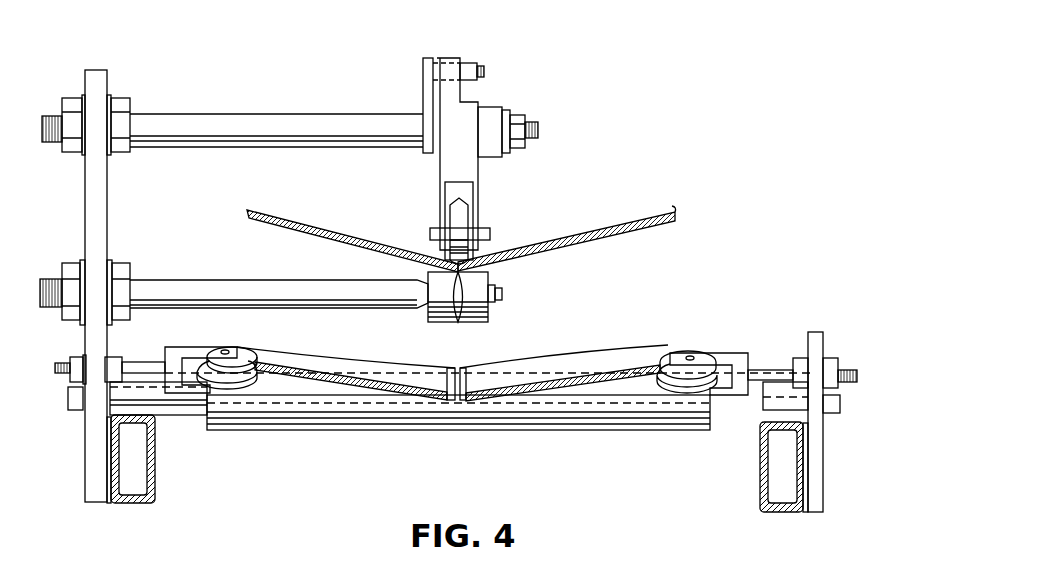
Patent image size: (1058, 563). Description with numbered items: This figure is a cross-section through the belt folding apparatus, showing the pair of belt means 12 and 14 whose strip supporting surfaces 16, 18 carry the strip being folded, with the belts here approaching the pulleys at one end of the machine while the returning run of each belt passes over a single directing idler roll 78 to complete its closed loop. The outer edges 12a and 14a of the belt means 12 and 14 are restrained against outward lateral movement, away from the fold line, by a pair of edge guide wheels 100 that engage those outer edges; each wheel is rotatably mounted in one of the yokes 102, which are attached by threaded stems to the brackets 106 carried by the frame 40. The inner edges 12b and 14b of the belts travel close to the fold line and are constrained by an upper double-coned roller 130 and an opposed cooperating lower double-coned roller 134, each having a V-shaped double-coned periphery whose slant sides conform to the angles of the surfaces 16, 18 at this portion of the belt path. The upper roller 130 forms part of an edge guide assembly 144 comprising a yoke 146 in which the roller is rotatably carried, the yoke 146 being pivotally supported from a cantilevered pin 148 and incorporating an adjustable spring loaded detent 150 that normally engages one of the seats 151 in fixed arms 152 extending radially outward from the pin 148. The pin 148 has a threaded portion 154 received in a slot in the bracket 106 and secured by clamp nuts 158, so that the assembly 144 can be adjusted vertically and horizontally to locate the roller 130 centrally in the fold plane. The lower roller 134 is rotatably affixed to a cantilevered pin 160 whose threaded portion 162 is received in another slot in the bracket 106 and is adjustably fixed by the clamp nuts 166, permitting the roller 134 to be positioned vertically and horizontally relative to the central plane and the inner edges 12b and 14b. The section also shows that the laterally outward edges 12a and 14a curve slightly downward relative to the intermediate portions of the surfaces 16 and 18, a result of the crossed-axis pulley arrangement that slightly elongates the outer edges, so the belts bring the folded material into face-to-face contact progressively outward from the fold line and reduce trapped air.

The belt means 12 is at (660, 222).
The outer edge 12a is at (676, 212).
The inner edge 12b is at (470, 272).
The belt means 14 is at (258, 221).
The outer edge 14a is at (247, 210).
The inner edge 14b is at (440, 275).
The strip supporting surface 16 is at (617, 232).
The strip supporting surface 18 is at (290, 222).
The frame 40 is at (149, 501).
The directing idler roll 78 is at (273, 430).
The edge guide wheels 100 is at (228, 352).
The yokes 102 is at (138, 362).
The brackets 106 is at (108, 190).
The upper double-coned roller 130 is at (462, 210).
The lower double-coned roller 134 is at (478, 312).
The edge guide assembly 144 is at (472, 142).
The yoke 146 is at (480, 172).
The cantilevered pin 148 is at (230, 147).
The adjustable spring loaded detent 150 is at (438, 72).
The seats 151 is at (436, 74).
The fixed arms 152 is at (423, 63).
The threaded portion 154 is at (133, 118).
The clamp nuts 158 is at (70, 98).
The cantilevered pin 160 is at (252, 280).
The threaded portion 162 is at (132, 282).
The clamp nuts 166 is at (70, 263).